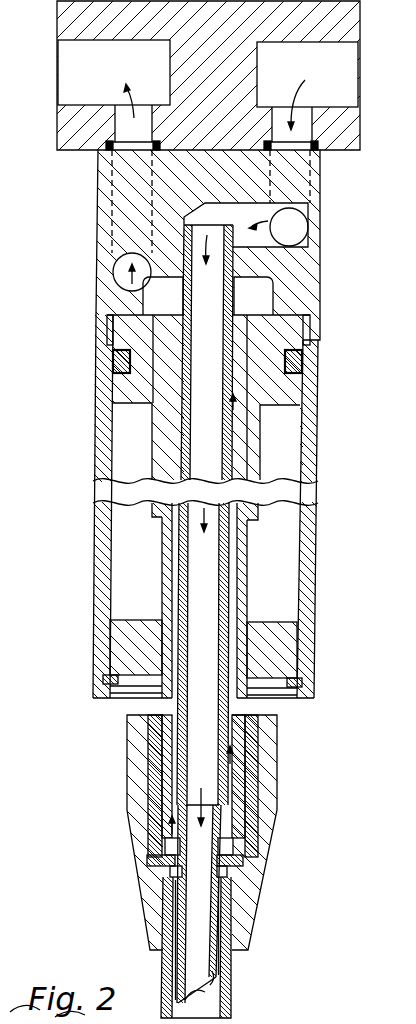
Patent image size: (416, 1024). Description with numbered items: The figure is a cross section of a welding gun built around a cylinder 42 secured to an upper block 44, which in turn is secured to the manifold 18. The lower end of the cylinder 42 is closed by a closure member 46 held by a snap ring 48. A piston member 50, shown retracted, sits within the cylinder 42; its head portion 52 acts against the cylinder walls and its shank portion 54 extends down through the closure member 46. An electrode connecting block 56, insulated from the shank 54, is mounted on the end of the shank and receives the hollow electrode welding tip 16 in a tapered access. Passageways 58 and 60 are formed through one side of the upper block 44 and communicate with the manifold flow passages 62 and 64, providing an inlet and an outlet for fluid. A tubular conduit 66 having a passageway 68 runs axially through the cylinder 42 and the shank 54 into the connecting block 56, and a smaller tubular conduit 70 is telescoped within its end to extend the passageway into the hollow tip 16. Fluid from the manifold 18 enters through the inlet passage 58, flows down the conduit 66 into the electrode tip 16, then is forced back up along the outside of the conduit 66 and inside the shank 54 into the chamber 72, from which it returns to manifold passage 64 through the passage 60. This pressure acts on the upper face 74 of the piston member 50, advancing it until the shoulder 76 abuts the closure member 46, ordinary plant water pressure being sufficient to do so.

The manifold 18 is at (68, 17).
The manifold flow passage 64 is at (78, 100).
The inlet passage 58 is at (310, 183).
The manifold flow passage 62 is at (321, 107).
The outlet passage 60 is at (115, 200).
The upper block 44 is at (298, 262).
The passageway 68 is at (222, 293).
The chamber 72 is at (143, 307).
The head portion 52 is at (139, 335).
The upper face 74 is at (176, 313).
The piston member 50 is at (277, 387).
The tubular conduit 66 is at (182, 492).
The cylinder 42 is at (313, 504).
The shoulder 76 is at (152, 518).
The shank portion 54 is at (238, 557).
The closure member 46 is at (275, 652).
The snap ring 48 is at (300, 682).
The electrode connecting block 56 is at (260, 785).
The smaller tubular conduit 70 is at (215, 900).
The hollow electrode welding tip 16 is at (233, 977).